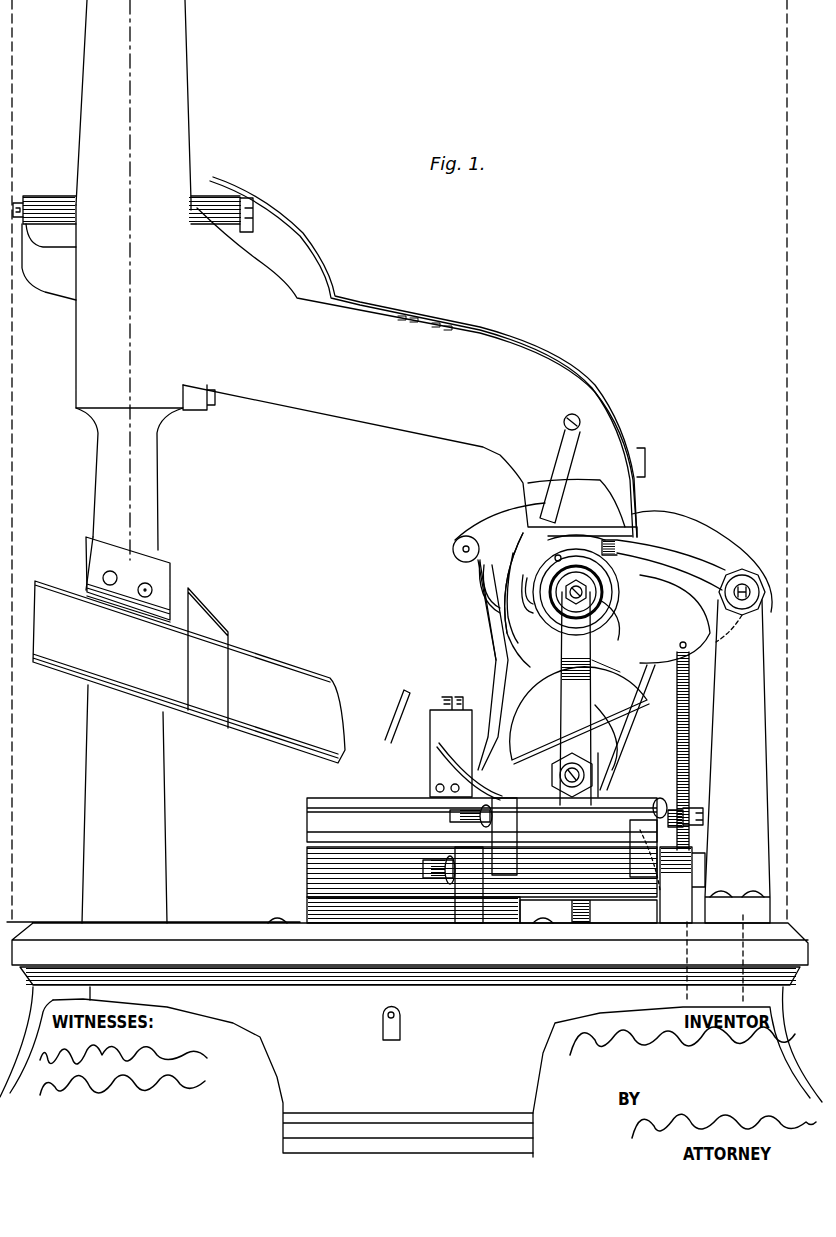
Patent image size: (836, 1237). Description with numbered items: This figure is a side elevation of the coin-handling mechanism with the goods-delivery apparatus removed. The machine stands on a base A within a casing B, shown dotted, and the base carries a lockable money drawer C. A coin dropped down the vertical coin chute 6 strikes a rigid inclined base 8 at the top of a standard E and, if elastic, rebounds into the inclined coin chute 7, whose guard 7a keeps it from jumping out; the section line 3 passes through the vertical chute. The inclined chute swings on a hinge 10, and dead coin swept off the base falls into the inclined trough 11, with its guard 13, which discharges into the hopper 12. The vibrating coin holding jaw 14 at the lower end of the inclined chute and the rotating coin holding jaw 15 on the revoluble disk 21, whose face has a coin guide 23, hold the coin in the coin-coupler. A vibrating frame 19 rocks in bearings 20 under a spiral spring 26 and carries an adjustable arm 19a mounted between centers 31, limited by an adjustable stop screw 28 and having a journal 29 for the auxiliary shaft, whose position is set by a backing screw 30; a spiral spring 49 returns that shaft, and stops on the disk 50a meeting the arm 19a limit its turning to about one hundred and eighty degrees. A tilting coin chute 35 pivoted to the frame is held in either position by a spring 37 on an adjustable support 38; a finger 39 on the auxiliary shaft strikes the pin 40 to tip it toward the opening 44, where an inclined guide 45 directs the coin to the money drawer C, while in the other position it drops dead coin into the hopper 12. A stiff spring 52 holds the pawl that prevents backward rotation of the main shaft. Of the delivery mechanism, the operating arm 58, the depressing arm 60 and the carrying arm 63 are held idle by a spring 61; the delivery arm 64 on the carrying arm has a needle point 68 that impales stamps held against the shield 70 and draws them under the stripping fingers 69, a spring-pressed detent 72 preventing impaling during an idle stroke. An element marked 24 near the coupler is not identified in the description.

The section line 3 is at (134, 280).
The vertical coin chute 6 is at (185, 8).
The inclined coin chute 7 is at (414, 372).
The guard 7a is at (305, 236).
The rigid inclined base 8 is at (145, 377).
The hinge 10 is at (36, 200).
The inclined trough 11 is at (189, 672).
The hopper 12 is at (482, 820).
The guard 13 is at (210, 603).
The vibrating coin holding jaw 14 is at (640, 581).
The rotating coin holding jaw 15 is at (518, 585).
The vibrating frame 19 is at (482, 792).
The adjustable arm 19a is at (542, 836).
The bearings 20 is at (469, 885).
The revoluble disk 21 is at (518, 634).
The coin guide 23 is at (590, 540).
The lever 24 is at (560, 498).
The spiral spring 26 is at (592, 908).
The adjustable stop screw 28 is at (573, 768).
The journal 29 is at (682, 885).
The adjustable backing screw 30 is at (575, 698).
The centers 31 is at (468, 812).
The tilting coin chute 35 is at (535, 688).
The spring 37 is at (618, 762).
The adjustable support 38 is at (603, 791).
The cam projection 39 is at (478, 590).
The pin 40 is at (598, 682).
The opening 44 is at (687, 950).
The inclined guide 45 is at (658, 845).
The spiral spring 49 is at (612, 628).
The disk 50a is at (562, 600).
The stiff spring 52 is at (640, 735).
The operating arm 58 is at (682, 548).
The depressing arm 60 is at (694, 646).
The spring 61 is at (702, 740).
The carrying arm 63 is at (488, 528).
The delivery arm 64 is at (498, 666).
The needle point 68 is at (485, 778).
The stripping fingers 69 is at (444, 776).
The shield 70 is at (396, 723).
The spring-pressed detent 72 is at (452, 718).
The base A is at (407, 953).
The casing B is at (768, 163).
The money drawer C is at (422, 1037).
The standard E is at (112, 766).